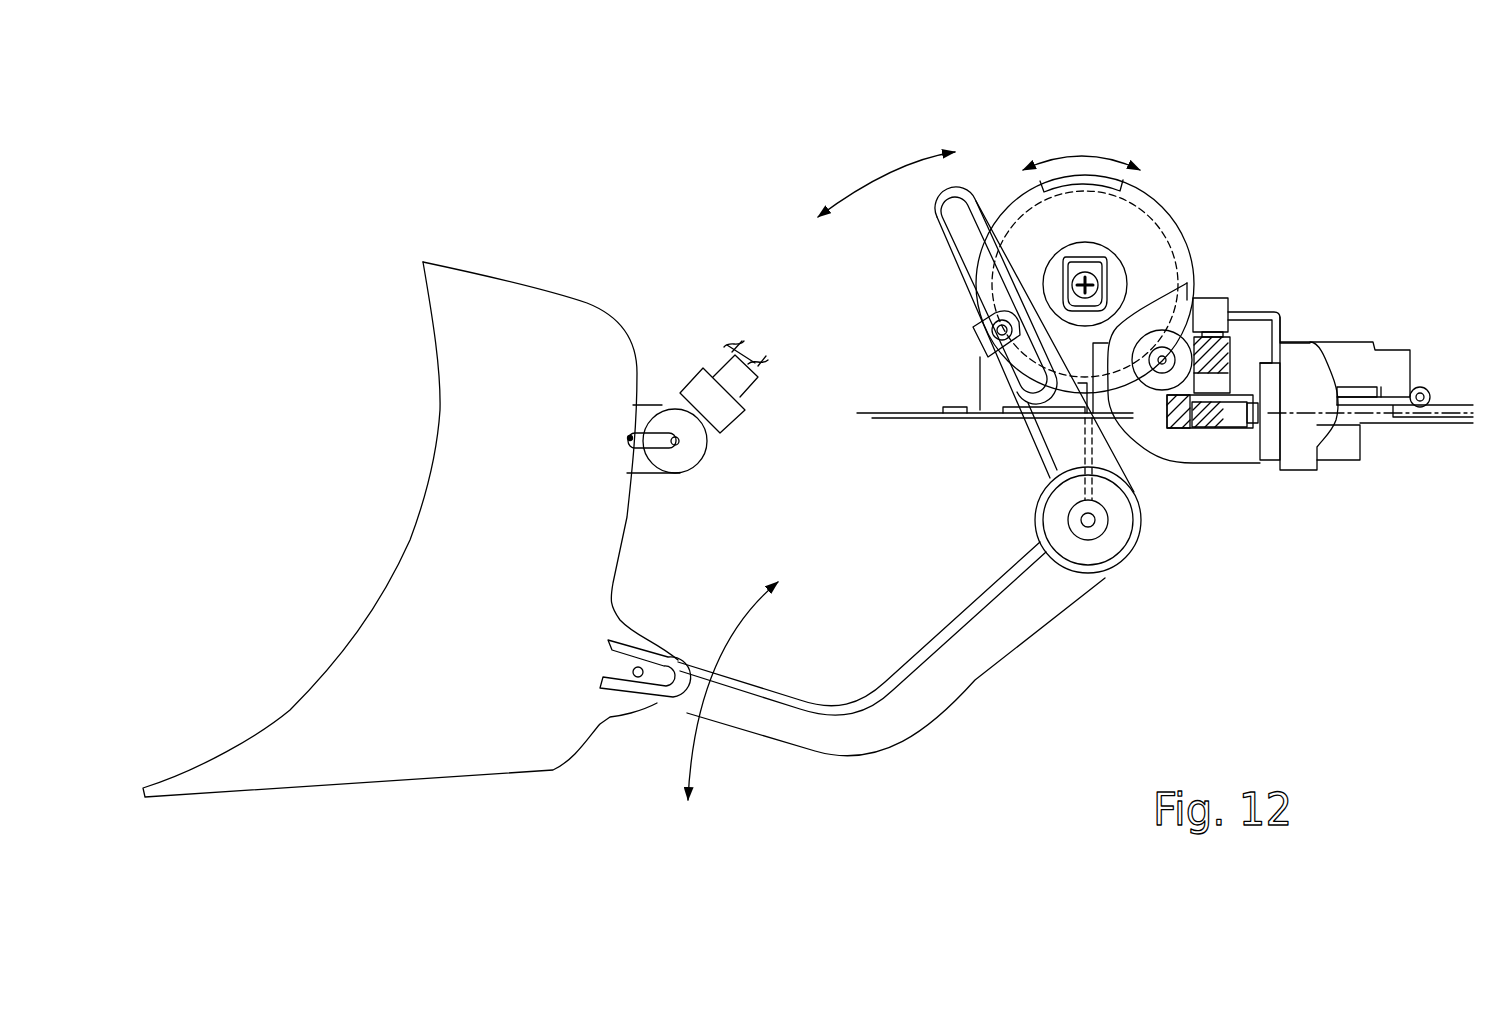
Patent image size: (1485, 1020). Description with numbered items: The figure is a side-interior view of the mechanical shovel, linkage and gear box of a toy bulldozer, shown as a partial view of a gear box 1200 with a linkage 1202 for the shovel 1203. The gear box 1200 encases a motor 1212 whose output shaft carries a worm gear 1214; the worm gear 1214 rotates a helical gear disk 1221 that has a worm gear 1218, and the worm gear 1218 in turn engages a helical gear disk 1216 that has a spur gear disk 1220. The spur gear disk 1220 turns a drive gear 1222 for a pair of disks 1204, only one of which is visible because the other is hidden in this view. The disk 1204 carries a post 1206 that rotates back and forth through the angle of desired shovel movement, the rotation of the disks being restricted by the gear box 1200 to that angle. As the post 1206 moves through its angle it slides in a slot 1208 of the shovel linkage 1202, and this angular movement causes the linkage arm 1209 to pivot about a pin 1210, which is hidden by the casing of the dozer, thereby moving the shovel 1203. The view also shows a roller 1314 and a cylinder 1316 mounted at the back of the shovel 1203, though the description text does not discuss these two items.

The gear box 1200 is at (1313, 333).
The linkage 1202 is at (972, 192).
The shovel 1203 is at (558, 403).
The disk 1204 is at (1191, 320).
The post 1206 is at (975, 328).
The slot 1208 is at (952, 226).
The linkage arm 1209 is at (950, 686).
The pin 1210 is at (1112, 527).
The motor 1212 is at (1305, 448).
The worm gear 1214 is at (1252, 432).
The helical gear disk 1216 is at (1197, 316).
The worm gear 1218 is at (1236, 360).
The spur gear disk 1220 is at (1161, 390).
The helical gear disk 1221 is at (1196, 434).
The drive gear 1222 is at (1139, 336).
The roller 1314 is at (690, 463).
The cylinder 1316 is at (745, 411).